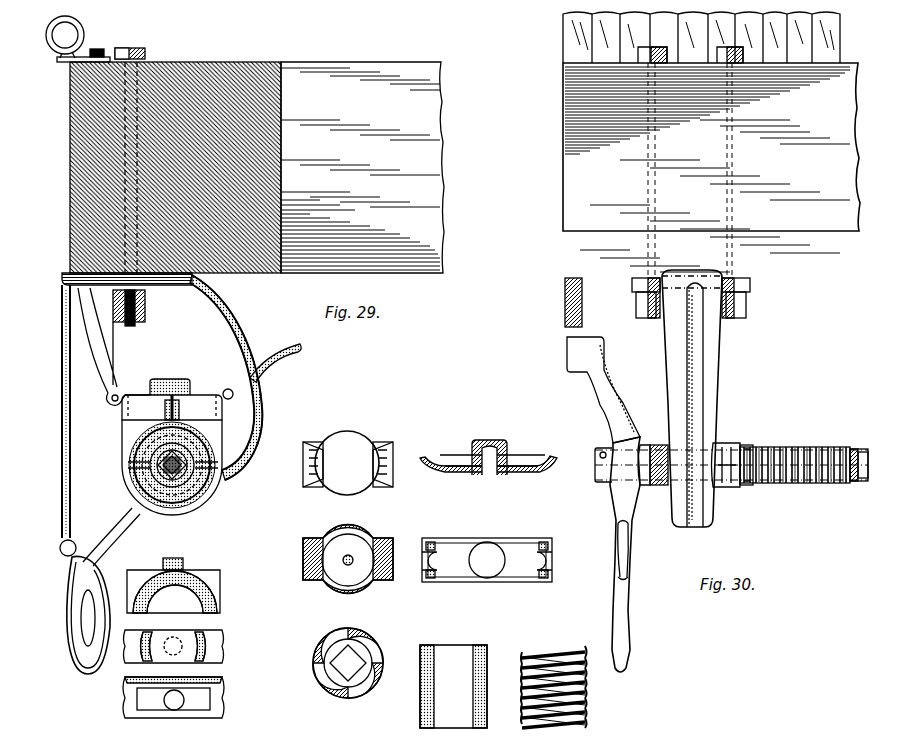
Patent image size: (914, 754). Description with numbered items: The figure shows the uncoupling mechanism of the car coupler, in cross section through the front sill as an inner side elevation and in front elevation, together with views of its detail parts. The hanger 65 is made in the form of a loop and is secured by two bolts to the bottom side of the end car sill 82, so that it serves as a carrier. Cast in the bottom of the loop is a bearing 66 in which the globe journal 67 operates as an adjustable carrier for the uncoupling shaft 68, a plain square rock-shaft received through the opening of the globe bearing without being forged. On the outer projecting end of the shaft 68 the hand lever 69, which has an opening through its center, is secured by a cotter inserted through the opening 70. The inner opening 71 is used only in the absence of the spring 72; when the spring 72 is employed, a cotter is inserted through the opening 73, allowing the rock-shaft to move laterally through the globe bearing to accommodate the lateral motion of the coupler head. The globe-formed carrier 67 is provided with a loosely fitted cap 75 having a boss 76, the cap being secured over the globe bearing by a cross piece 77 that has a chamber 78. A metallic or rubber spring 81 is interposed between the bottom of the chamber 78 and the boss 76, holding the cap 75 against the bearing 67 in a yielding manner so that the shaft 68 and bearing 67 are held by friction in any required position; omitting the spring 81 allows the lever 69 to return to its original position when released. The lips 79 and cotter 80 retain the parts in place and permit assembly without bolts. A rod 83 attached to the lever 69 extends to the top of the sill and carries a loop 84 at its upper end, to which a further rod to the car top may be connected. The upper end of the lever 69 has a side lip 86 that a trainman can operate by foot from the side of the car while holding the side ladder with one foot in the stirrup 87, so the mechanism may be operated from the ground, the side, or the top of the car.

In FIG. 29, the hanger 65 is at (210, 300).
In FIG. 30, the hanger 65 is at (704, 400).
In FIG. 29, the bearing 66 is at (205, 500).
In FIG. 29, the globe journal 67 is at (352, 447).
In FIG. 30, the globe journal 67 is at (663, 488).
In FIG. 29, the uncoupling shaft 68 is at (190, 478).
In FIG. 30, the uncoupling shaft 68 is at (858, 480).
In FIG. 29, the hand lever 69 is at (75, 628).
In FIG. 30, the hand lever 69 is at (628, 640).
In FIG. 30, the opening 70 is at (601, 458).
In FIG. 30, the inner opening 71 is at (760, 447).
In FIG. 30, the spring 72 is at (790, 484).
In FIG. 30, the opening 73 is at (855, 450).
In FIG. 29, the cap 75 is at (232, 435).
In FIG. 29, the boss 76 is at (170, 410).
In FIG. 29, the cross piece 77 is at (195, 405).
In FIG. 29, the chamber 78 is at (492, 456).
In FIG. 29, the lips 79 is at (118, 390).
In FIG. 29, the cotter 80 is at (245, 388).
In FIG. 29, the spring 81 is at (535, 655).
In FIG. 29, the end car sill 82 is at (165, 86).
In FIG. 30, the end car sill 82 is at (572, 152).
In FIG. 29, the rod 83 is at (62, 458).
In FIG. 29, the loop 84 is at (84, 36).
In FIG. 29, the side lip 86 is at (275, 352).
In FIG. 30, the side lip 86 is at (575, 350).
In FIG. 30, the stirrup 87 is at (568, 298).